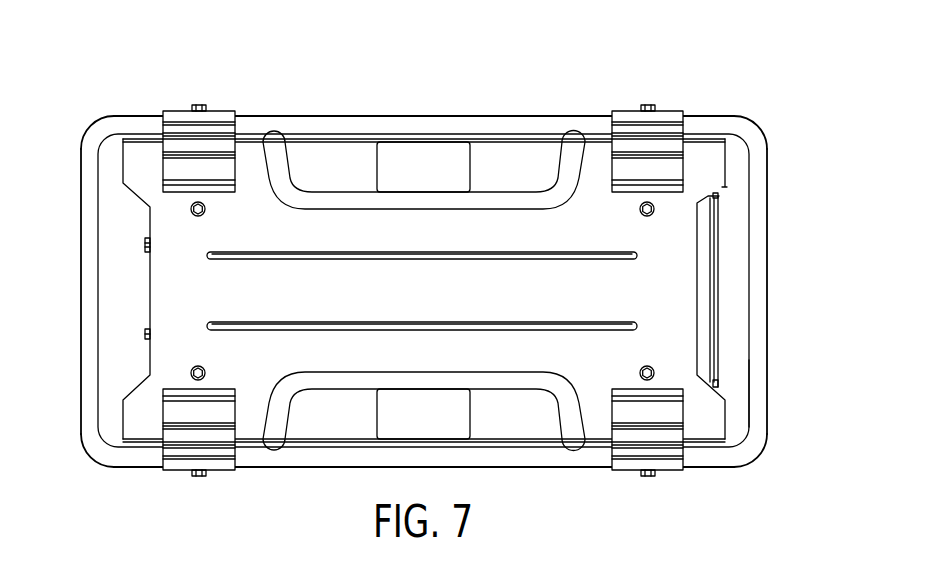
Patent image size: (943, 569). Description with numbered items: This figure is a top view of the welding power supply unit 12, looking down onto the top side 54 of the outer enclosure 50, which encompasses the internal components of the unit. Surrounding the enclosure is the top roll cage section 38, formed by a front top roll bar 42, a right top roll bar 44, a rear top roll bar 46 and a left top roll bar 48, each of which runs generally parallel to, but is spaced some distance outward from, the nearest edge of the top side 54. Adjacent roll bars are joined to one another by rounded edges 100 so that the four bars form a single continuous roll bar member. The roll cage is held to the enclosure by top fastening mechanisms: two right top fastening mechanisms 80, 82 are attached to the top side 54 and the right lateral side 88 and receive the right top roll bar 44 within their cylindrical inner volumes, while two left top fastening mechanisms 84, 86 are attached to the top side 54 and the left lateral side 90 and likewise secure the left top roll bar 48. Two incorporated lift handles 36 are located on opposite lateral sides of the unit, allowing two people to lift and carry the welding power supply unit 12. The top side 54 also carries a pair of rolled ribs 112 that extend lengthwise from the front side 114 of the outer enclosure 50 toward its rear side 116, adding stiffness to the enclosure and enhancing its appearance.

The welding power supply unit 12 is at (421, 285).
The incorporated lift handle 36 is at (398, 202).
The top roll cage section 38 is at (769, 298).
The front top roll bar 42 is at (87, 285).
The right top roll bar 44 is at (708, 460).
The rear top roll bar 46 is at (758, 383).
The left top roll bar 48 is at (698, 118).
The outer enclosure 50 is at (682, 252).
The top side 54 is at (423, 298).
The right top fastening mechanism 80 is at (223, 462).
The right top fastening mechanism 82 is at (625, 465).
The left top fastening mechanism 84 is at (222, 117).
The left top fastening mechanism 86 is at (627, 115).
The right lateral side 88 is at (335, 479).
The left lateral side 90 is at (405, 100).
The rounded edge 100 is at (94, 134).
The rolled rib 112 is at (435, 322).
The front side 114 is at (71, 325).
The rear side 116 is at (772, 402).